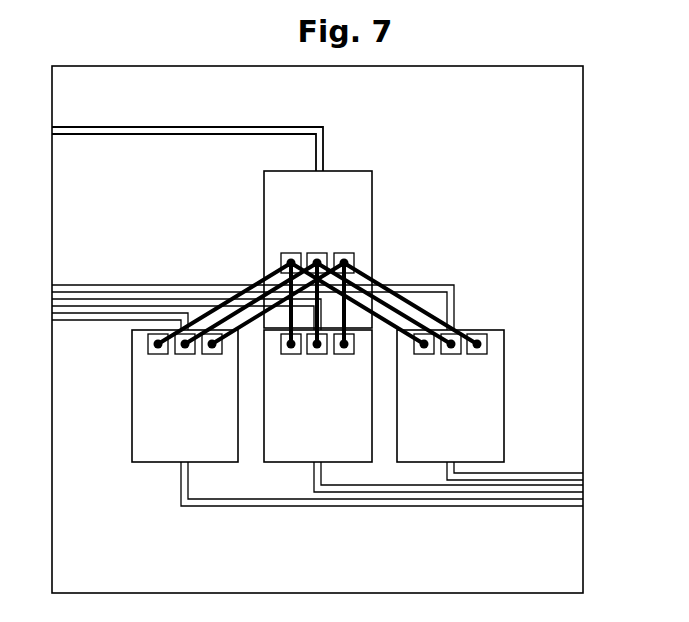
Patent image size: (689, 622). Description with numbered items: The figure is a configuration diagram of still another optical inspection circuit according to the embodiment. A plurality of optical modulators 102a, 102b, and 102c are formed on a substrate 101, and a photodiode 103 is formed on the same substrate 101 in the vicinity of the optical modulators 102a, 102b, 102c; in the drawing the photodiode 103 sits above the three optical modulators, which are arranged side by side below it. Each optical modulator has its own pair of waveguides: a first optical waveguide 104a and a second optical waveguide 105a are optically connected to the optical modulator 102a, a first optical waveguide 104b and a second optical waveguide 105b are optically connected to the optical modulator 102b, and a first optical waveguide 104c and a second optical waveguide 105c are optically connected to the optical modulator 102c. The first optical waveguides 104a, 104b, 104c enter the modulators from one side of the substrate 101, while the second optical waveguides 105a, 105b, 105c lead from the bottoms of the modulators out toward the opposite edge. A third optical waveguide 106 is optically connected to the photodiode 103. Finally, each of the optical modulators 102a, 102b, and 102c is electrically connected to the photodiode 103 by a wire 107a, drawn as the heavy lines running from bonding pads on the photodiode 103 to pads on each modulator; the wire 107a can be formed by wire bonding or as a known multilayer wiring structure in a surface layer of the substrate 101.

The substrate 101 is at (583, 147).
The optical modulator 102a is at (132, 381).
The optical modulator 102b is at (357, 407).
The optical modulator 102c is at (505, 366).
The photodiode 103 is at (372, 200).
The first optical waveguide 104a is at (86, 316).
The first optical waveguide 104b is at (158, 300).
The first optical waveguide 104c is at (222, 285).
The second optical waveguide 105a is at (258, 508).
The second optical waveguide 105b is at (378, 508).
The second optical waveguide 105c is at (499, 474).
The third optical waveguide 106 is at (234, 127).
The wire 107a is at (412, 265).